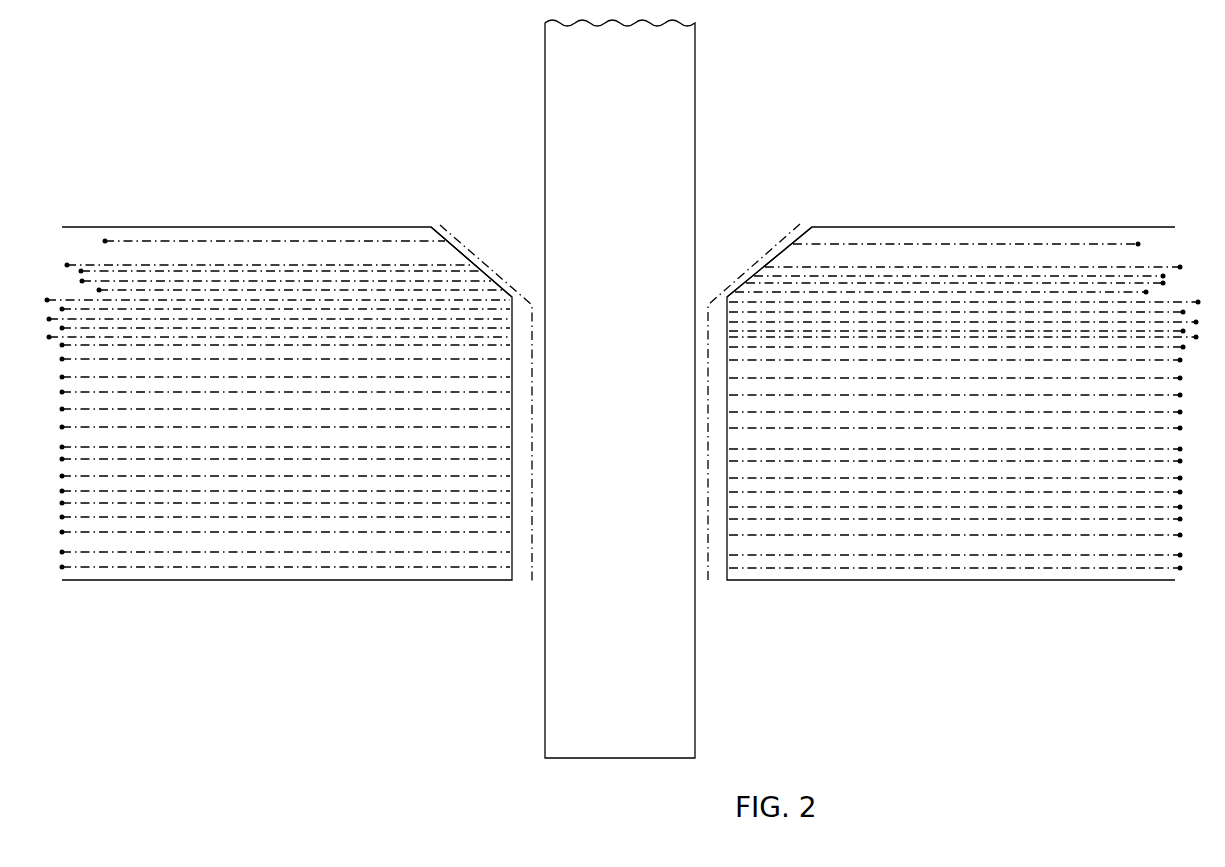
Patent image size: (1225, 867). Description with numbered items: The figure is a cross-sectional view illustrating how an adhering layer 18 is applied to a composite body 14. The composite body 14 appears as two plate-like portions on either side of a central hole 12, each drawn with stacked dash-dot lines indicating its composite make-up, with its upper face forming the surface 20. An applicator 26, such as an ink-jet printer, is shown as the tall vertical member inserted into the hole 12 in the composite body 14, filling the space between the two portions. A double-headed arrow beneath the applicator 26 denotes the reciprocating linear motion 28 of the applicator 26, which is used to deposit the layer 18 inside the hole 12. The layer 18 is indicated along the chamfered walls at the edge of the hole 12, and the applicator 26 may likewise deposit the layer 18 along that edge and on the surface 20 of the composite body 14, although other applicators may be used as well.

The surface 20 is at (256, 226).
The hole 12 is at (466, 229).
The composite body 14 is at (953, 581).
The layer 18 is at (750, 256).
The applicator 26 is at (697, 135).
The reciprocating linear motion 28 is at (620, 769).